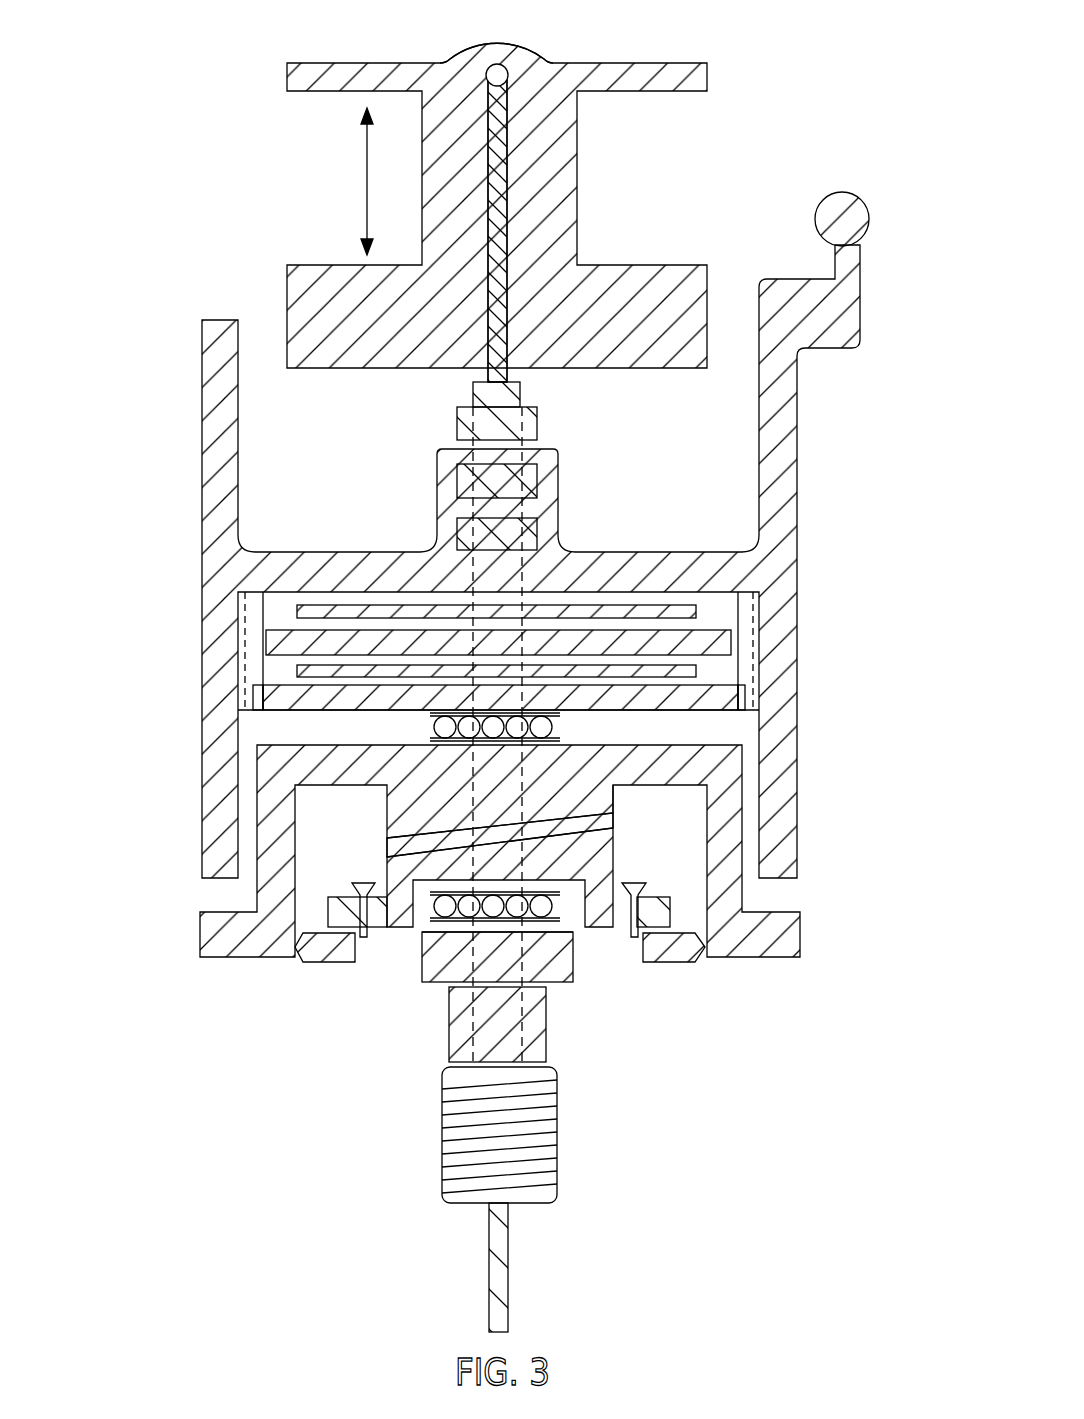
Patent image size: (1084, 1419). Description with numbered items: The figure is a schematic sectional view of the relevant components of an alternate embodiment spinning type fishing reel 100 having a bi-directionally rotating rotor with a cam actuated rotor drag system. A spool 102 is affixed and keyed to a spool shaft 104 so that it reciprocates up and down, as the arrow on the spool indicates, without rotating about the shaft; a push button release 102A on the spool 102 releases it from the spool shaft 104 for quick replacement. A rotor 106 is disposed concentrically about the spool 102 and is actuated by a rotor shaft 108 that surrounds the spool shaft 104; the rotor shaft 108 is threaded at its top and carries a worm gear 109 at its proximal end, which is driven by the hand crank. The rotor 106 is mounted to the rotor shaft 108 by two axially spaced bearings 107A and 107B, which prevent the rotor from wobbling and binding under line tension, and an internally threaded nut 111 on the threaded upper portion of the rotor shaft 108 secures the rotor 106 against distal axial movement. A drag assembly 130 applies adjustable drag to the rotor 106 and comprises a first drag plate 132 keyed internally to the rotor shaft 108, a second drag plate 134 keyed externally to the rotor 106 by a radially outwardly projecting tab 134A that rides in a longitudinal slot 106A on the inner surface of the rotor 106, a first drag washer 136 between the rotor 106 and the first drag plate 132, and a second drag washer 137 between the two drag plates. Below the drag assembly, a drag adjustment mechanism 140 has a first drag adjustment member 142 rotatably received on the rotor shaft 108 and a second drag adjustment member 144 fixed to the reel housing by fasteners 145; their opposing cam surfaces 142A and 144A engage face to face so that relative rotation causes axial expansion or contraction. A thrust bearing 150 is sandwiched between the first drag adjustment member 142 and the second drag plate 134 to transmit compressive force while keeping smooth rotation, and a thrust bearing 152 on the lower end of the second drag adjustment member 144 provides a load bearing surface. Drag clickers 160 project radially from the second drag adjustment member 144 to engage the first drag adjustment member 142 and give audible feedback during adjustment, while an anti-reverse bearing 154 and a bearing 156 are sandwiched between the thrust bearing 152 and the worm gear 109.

The fishing reel 100 is at (775, 126).
The spool 102 is at (575, 146).
The push button release 102A is at (556, 42).
The spool shaft 104 is at (500, 250).
The rotor 106 is at (207, 530).
The longitudinal slot 106A is at (738, 604).
The first bearing 107A is at (528, 546).
The second bearing 107B is at (530, 483).
The rotor shaft 108 is at (473, 390).
The worm gear 109 is at (442, 1130).
The internally threaded nut 111 is at (537, 422).
The drag assembly 130 is at (502, 623).
The first drag plate 132 is at (722, 648).
The second drag plate 134 is at (715, 694).
The radially outwardly projecting tab 134A is at (742, 703).
The first drag washer 136 is at (655, 605).
The second drag washer 137 is at (690, 670).
The drag adjustment mechanism 140 is at (500, 884).
The first drag adjustment member 142 is at (725, 793).
The cam surface 142A is at (603, 816).
The second drag adjustment member 144 is at (595, 855).
The cam surface 144A is at (388, 840).
The fasteners 145 is at (360, 883).
The thrust bearing 150 is at (560, 723).
The thrust bearing 152 is at (422, 935).
The anti-reverse bearing 154 is at (545, 1030).
The bearing 156 is at (573, 965).
The drag clicker 160 is at (333, 965).